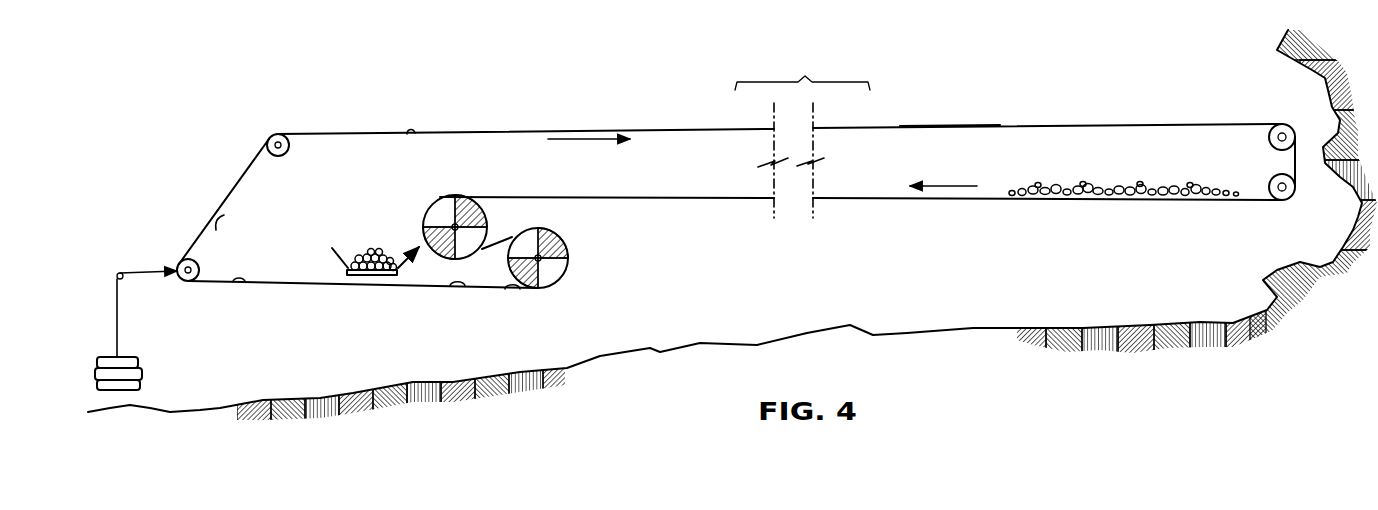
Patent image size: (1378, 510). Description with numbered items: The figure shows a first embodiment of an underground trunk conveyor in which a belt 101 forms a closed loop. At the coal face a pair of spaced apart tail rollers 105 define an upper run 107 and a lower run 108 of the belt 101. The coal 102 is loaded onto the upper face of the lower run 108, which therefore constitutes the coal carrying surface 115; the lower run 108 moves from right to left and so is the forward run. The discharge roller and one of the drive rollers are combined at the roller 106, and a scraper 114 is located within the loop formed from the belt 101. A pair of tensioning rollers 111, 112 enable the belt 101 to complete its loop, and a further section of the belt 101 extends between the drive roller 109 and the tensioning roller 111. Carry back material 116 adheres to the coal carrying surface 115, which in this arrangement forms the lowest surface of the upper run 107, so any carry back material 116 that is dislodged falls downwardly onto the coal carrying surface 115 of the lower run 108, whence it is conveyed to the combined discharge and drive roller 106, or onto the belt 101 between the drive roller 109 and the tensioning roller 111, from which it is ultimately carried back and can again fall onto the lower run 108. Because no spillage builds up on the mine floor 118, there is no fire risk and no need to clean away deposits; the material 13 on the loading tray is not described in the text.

The material on loading tray 13 is at (370, 279).
The belt 101 is at (577, 124).
The coal 102 is at (1107, 190).
The tail rollers 105 is at (1269, 134).
The combined discharge and drive roller 106 is at (438, 212).
The upper run 107 is at (1000, 122).
The lower run 108 is at (948, 199).
The drive roller 109 is at (556, 270).
The tensioning roller 111 is at (183, 262).
The tensioning roller 112 is at (274, 134).
The scraper 114 is at (418, 258).
The coal carrying surface 115 is at (838, 129).
The carry back material 116 is at (341, 131).
The mine floor 118 is at (1090, 325).